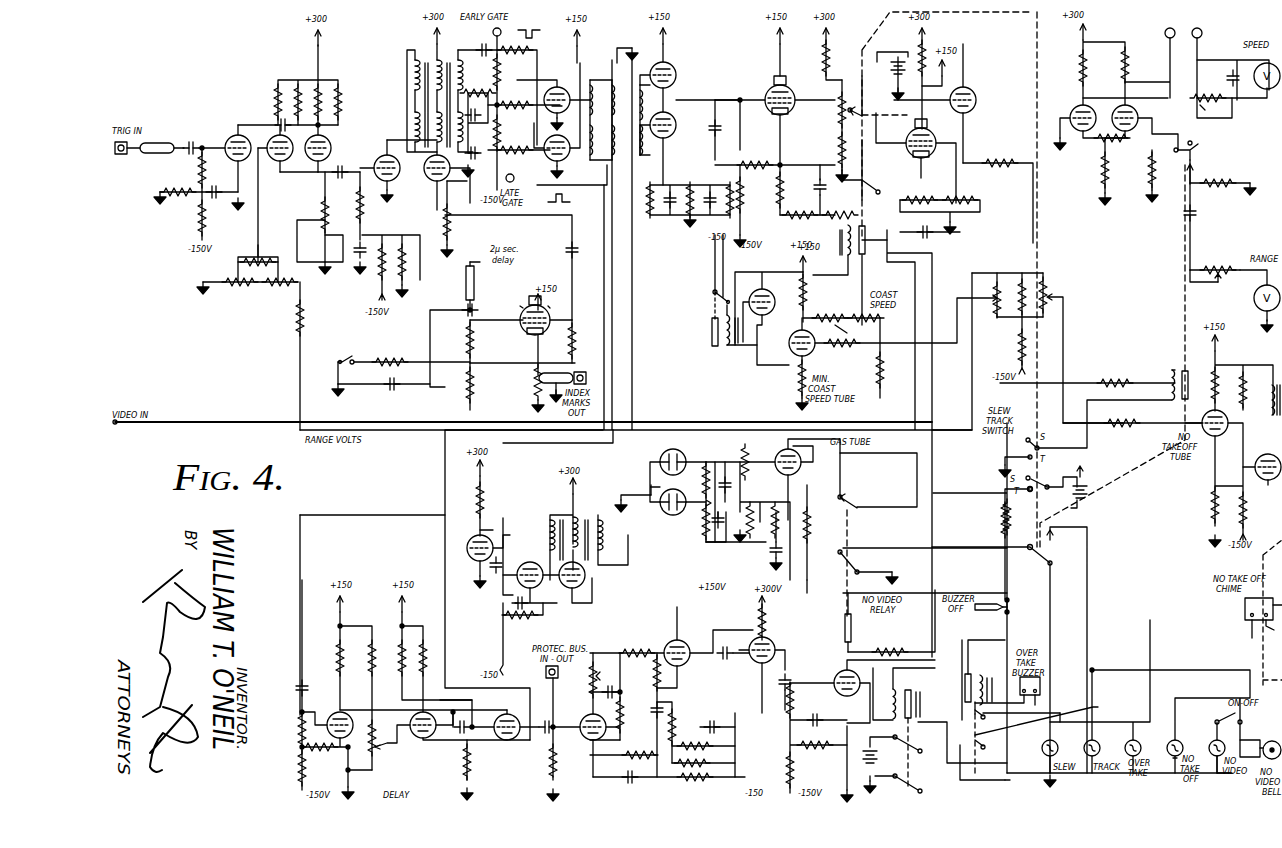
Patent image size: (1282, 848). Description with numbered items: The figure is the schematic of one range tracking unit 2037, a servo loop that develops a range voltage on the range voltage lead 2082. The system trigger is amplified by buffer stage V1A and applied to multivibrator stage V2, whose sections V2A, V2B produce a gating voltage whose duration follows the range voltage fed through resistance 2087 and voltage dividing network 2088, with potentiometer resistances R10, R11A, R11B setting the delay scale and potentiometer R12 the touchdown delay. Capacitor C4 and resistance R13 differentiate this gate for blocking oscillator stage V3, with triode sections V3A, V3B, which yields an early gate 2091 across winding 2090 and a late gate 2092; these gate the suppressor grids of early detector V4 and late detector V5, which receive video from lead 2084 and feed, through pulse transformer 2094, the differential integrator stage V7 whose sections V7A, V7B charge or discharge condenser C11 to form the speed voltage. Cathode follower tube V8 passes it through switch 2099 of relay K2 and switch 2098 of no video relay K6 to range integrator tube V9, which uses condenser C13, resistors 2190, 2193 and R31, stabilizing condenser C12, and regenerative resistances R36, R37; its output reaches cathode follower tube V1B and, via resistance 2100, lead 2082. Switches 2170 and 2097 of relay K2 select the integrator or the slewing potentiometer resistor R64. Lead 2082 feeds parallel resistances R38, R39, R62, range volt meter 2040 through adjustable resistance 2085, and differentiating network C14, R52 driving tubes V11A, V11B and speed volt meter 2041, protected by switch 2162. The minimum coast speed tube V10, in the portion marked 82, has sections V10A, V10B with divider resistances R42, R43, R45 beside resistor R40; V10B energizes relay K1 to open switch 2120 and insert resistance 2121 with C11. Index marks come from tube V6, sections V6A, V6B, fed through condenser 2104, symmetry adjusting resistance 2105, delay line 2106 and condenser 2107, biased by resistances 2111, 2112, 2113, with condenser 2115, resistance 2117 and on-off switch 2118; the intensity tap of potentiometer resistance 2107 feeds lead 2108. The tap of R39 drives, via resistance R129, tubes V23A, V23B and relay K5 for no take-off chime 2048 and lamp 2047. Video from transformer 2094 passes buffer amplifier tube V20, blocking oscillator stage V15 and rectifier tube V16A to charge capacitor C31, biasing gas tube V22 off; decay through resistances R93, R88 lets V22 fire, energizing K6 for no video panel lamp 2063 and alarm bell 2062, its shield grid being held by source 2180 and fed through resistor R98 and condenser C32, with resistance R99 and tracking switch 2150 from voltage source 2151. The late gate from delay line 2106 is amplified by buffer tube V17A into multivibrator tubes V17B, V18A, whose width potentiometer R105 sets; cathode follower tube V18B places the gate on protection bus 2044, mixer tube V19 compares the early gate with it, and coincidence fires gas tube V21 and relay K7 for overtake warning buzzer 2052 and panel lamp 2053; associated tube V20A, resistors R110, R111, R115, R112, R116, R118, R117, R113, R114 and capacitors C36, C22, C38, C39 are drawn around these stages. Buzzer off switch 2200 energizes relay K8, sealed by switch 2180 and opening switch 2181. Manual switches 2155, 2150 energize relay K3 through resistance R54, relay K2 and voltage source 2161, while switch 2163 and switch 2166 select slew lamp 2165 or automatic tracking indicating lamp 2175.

The tracking unit 2037 is at (252, 77).
The adjustable resistance 2085 is at (132, 153).
The voltage dividing network 2088 is at (218, 275).
The potentiometer resistance R10 is at (264, 259).
The potentiometer resistance R11A is at (240, 284).
The potentiometer resistance R11B is at (280, 284).
The resistance 2087 is at (306, 318).
The range voltage lead 2082 is at (298, 364).
The video lead 2084 is at (210, 410).
The on-off switch 2118 is at (360, 348).
The resistance 2117 is at (395, 356).
The condenser 2115 is at (384, 397).
The buffer stage V1A is at (236, 140).
The multivibrator tube V2A is at (270, 160).
The multivibrator stage V2 is at (313, 168).
The multivibrator tube V2B is at (328, 141).
The capacitor C4 is at (345, 165).
The resistance R13 is at (358, 187).
The potentiometer resistance R12 is at (326, 223).
The tube section V3A is at (380, 153).
The blocking oscillator stage V3 is at (420, 182).
The blocking oscillator tube V3B is at (425, 204).
The symmetry adjusting resistance 2105 is at (442, 219).
The winding 2090 is at (460, 86).
The early gate 2091 is at (543, 21).
The early detector V4 is at (552, 85).
The late detector V5 is at (567, 162).
The pulse transformer 2094 is at (598, 76).
The late gate 2092 is at (578, 196).
The integrator tube V7A is at (672, 66).
The differential integrator stage V7 is at (674, 100).
The integrator tube V7B is at (668, 138).
The cathode follower tube V8 is at (775, 116).
The condenser C11 is at (722, 128).
The resistance 2121 is at (775, 158).
The voltage divider resistance R31 is at (752, 206).
The resistance 2193 is at (796, 190).
The resistor 2190 is at (819, 223).
The condenser C12 is at (824, 176).
The potentiometer resistor R64 is at (842, 82).
The switch 2170 is at (867, 96).
The voltage source 2161 is at (899, 65).
The switch 2099 is at (866, 170).
The range integrator tube V9 is at (928, 160).
The resistance R36 is at (921, 189).
The resistance R37 is at (940, 198).
The cathode follower tube V1B is at (974, 97).
The resistance 2100 is at (998, 162).
The condenser C13 is at (930, 234).
The switch 2097 is at (897, 252).
The relay K2 is at (868, 265).
The resistance R42 is at (815, 297).
The triode section V10B is at (769, 308).
The tube V10 is at (762, 320).
The triode section V10A is at (814, 348).
The resistance R43 is at (900, 321).
The resistance R45 is at (880, 366).
The min coast speed tube circuit 82 is at (834, 373).
The switch 2120 is at (712, 302).
The relay K1 is at (724, 357).
The condenser 2104 is at (570, 250).
The delay line 2106 is at (464, 281).
The potentiometer resistance 2107 is at (476, 312).
The resistance 2113 is at (472, 339).
The resistance 2111 is at (476, 386).
The pentode V6 is at (521, 327).
The tube V6B is at (526, 306).
The tube V6A is at (548, 306).
The resistance 2112 is at (576, 330).
The lead 2108 is at (568, 376).
The speed volt meter 2041 is at (1267, 90).
The tube V11B is at (1070, 108).
The tube V11A is at (1142, 116).
The switch 2162 is at (1192, 152).
The resistance R52 is at (1222, 180).
The capacitor C14 is at (1196, 214).
The range volt meter 2040 is at (1252, 302).
The fixed resistance R62 is at (1006, 270).
The potentiometer resistance R39 is at (1052, 294).
The potentiometer resistance R38 is at (1002, 320).
The resistor R40 is at (1018, 350).
The resistance R54 is at (1114, 376).
The relay K3 is at (1168, 368).
The resistance R129 is at (1124, 430).
The relay K5 is at (1255, 370).
The tube V23A is at (1218, 438).
The triode section V23B is at (1264, 484).
The no take-off chime 2048 is at (1242, 610).
The switch 2155 is at (1025, 447).
The voltage source 2151 is at (1082, 481).
The tracking switch 2150 is at (1044, 500).
The switch 2163 is at (1053, 546).
The buffer amplifier tube V20 is at (466, 545).
The blocking oscillator stage V15 is at (578, 591).
The rectifier tube V16A is at (678, 456).
The resistance R93 is at (651, 484).
The resistance R88 is at (704, 536).
The condenser C32 is at (708, 541).
The sealing switch 2180 is at (773, 562).
The gas tube V22 is at (776, 450).
The capacitor C31 is at (731, 486).
The switch 2098 is at (877, 480).
The resistor R98 is at (813, 538).
The switch 2166 is at (865, 562).
The slew lamp 2165 is at (909, 574).
The buzzer off switch 2200 is at (1004, 604).
The no video relay K6 is at (861, 634).
The resistance R99 is at (896, 650).
The tube section V20A is at (750, 648).
The mixer tube V19 is at (692, 662).
The resistor R111 is at (648, 642).
The capacitor C36 is at (614, 690).
The capacitor C22 is at (654, 712).
The resistor R115 is at (657, 688).
The resistor R112 is at (635, 696).
The resistor R116 is at (674, 706).
The capacitor C38 is at (722, 728).
The resistor R118 is at (720, 746).
The resistor R117 is at (716, 764).
The resistor R113 is at (614, 760).
The capacitor C39 is at (632, 778).
The resistor R114 is at (690, 778).
The gas tube V21 is at (840, 700).
The relay K7 is at (938, 686).
The buffer tube V17A is at (332, 714).
The multivibrator tube V17B is at (422, 747).
The potentiometer resistance R105 is at (376, 748).
The multivibrator tube V18A is at (516, 742).
The cathode follower tube V18B is at (600, 747).
The resistor R110 is at (593, 672).
The protection bus 2044 is at (580, 698).
The relay K8 is at (982, 666).
The overtake warning buzzer 2052 is at (1040, 690).
The automatic tracking indicating lamp 2175 is at (1105, 750).
The overtake warning panel lamp 2053 is at (1145, 750).
The switch 2181 is at (1053, 783).
The no take-off channel lamp 2047 is at (1174, 756).
The no video panel lamp 2063 is at (1217, 738).
The no video alarm bell 2062 is at (1270, 740).